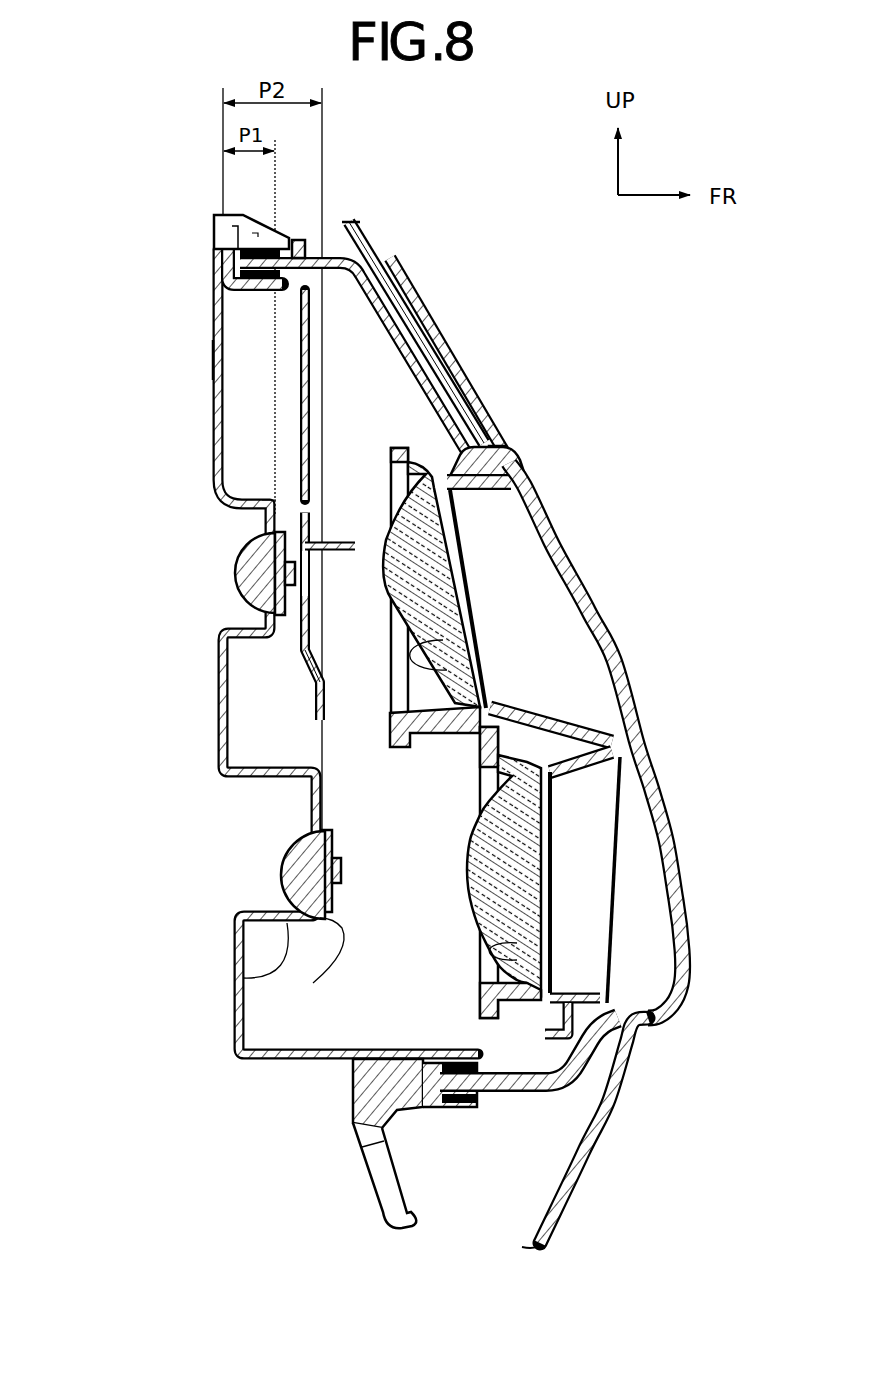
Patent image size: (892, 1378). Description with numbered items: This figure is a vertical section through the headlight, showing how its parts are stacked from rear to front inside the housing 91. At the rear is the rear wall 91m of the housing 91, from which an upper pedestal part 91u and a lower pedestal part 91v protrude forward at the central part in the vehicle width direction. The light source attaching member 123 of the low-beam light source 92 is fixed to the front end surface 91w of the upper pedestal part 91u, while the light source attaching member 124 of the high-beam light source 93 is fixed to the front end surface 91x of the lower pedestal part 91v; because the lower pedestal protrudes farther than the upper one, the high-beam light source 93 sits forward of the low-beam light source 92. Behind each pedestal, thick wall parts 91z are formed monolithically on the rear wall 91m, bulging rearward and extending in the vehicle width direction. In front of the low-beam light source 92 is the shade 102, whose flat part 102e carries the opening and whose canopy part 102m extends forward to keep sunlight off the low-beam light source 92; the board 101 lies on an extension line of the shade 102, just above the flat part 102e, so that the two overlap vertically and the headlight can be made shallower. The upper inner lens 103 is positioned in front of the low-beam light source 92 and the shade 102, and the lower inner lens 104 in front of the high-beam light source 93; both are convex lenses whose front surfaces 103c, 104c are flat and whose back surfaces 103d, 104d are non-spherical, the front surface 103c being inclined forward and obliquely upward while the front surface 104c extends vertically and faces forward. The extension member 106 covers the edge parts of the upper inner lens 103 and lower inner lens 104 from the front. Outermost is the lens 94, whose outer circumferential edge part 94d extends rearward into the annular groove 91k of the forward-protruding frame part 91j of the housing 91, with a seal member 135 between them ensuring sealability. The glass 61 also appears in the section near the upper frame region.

The window glass 61 is at (368, 242).
The housing 91 is at (204, 312).
The rear wall 91m is at (214, 366).
The front end surface 91w is at (282, 505).
The upper pedestal part 91u is at (300, 520).
The thick wall part 91z is at (292, 573).
The lower pedestal part 91v is at (287, 923).
The front end surface 91x is at (313, 983).
The frame part 91j is at (415, 1110).
The annular groove 91k is at (452, 1100).
The low-beam light source 92 is at (406, 507).
The high-beam light source 93 is at (342, 868).
The lens 94 is at (416, 337).
The outer circumferential edge part 94d is at (462, 1102).
The board 101 is at (313, 335).
The shade 102 is at (318, 517).
The canopy part 102m is at (496, 452).
The flat part 102e is at (300, 648).
The upper inner lens 103 is at (458, 586).
The front surface 103c is at (458, 618).
The back surface 103d is at (470, 662).
The lower inner lens 104 is at (554, 850).
The front surface 104c is at (530, 882).
The back surface 104d is at (480, 962).
The extension member 106 is at (510, 456).
The light source attaching member 123 is at (244, 548).
The light source attaching member 124 is at (286, 846).
The seal member 135 is at (474, 1098).